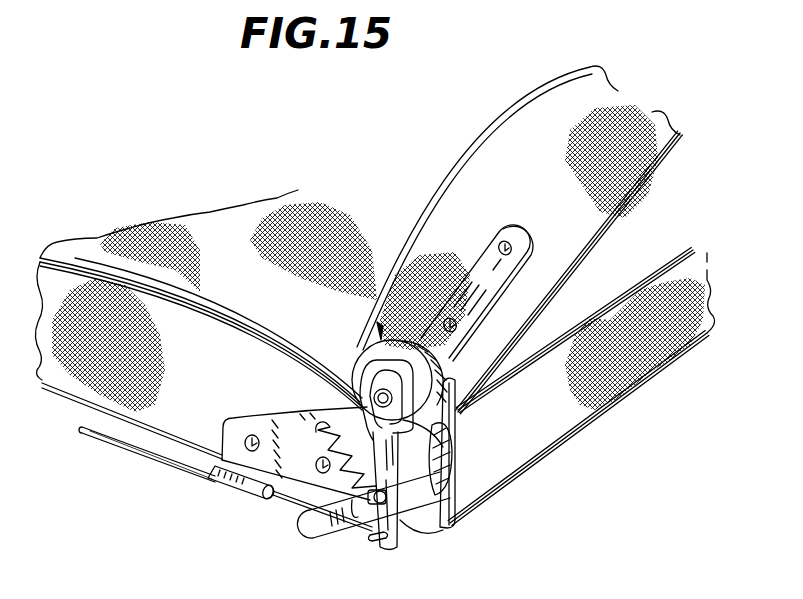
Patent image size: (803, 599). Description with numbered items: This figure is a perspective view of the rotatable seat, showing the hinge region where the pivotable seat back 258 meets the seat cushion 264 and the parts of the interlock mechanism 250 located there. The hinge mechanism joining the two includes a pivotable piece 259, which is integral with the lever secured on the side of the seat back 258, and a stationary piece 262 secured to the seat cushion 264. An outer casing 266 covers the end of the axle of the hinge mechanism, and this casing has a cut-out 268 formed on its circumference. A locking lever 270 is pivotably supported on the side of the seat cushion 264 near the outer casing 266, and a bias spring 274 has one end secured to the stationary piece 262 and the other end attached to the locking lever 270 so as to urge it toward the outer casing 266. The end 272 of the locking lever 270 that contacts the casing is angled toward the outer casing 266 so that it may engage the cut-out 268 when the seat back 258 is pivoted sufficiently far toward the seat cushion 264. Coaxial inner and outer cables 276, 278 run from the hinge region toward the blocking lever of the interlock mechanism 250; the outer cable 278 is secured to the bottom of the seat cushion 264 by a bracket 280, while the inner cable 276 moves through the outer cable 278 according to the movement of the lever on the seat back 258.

The interlock mechanism 250 is at (380, 330).
The pivotable seat back 258 is at (533, 155).
The pivotable piece 259 is at (493, 267).
The stationary piece 262 is at (270, 437).
The seat cushion 264 is at (213, 337).
The outer casing 266 is at (437, 397).
The cut-out 268 is at (367, 420).
The locking lever 270 is at (397, 493).
The angled end 272 is at (443, 447).
The bias spring 274 is at (357, 517).
The inner cable 276 is at (288, 507).
The outer cable 278 is at (183, 467).
The bracket 280 is at (247, 483).